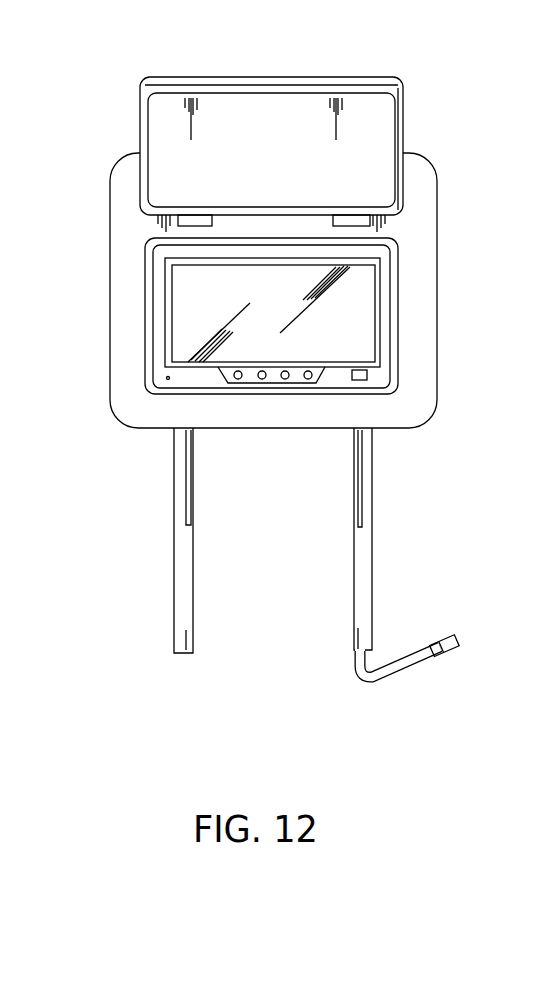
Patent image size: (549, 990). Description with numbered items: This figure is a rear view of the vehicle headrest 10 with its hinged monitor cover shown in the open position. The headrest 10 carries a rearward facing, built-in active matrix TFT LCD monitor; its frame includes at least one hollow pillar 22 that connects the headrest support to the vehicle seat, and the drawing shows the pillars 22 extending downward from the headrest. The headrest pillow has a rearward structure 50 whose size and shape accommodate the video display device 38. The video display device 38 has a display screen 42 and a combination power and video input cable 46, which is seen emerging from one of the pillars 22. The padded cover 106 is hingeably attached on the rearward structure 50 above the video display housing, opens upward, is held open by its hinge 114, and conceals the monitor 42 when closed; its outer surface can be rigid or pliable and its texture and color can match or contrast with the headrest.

The headrest monitor assembly 10 is at (278, 415).
The hollow pillar 22 is at (373, 557).
The video display device 38 is at (152, 387).
The display screen 42 is at (183, 322).
The combination power and video input cable 46 is at (408, 658).
The rearward structure 50 is at (418, 403).
The lid / cover 106 is at (375, 80).
The hinge brackets 114 is at (386, 226).